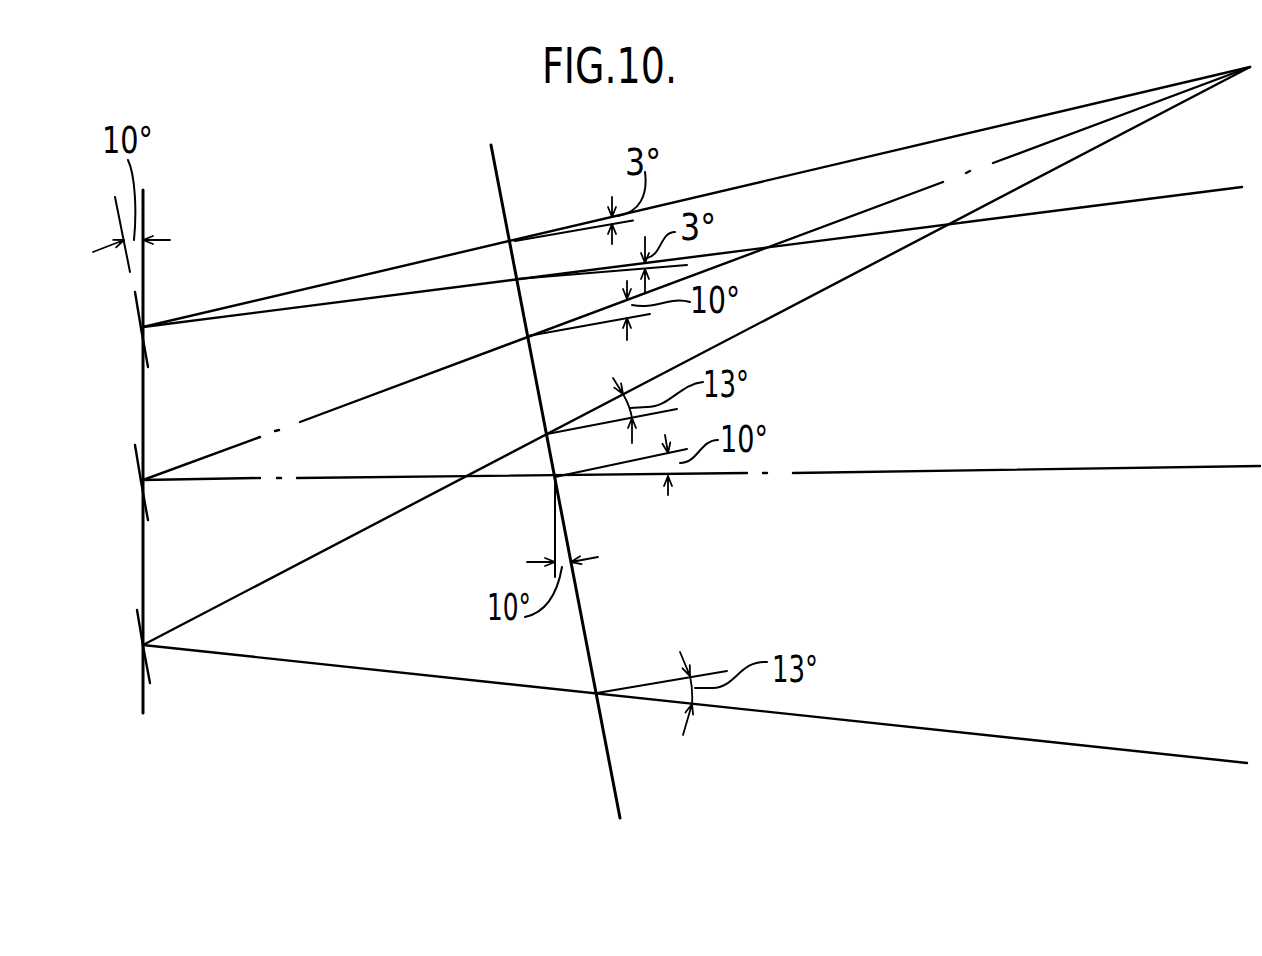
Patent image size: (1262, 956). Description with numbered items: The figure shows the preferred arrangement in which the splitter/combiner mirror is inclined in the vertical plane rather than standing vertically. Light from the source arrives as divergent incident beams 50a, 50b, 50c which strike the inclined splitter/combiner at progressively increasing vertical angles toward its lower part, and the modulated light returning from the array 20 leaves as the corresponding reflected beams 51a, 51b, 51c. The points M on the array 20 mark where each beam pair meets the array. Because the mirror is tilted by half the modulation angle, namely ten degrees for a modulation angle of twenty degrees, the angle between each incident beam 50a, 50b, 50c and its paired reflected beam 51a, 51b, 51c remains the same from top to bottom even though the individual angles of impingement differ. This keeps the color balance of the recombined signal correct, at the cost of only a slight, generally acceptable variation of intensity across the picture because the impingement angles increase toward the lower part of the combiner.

The array 20 is at (140, 703).
The object points M is at (140, 330).
The incident beam 50a is at (900, 150).
The incident beam 50b is at (1025, 148).
The incident beam 50c is at (1113, 137).
The reflected beam 51a is at (1110, 207).
The reflected beam 51b is at (1158, 467).
The reflected beam 51c is at (1172, 755).